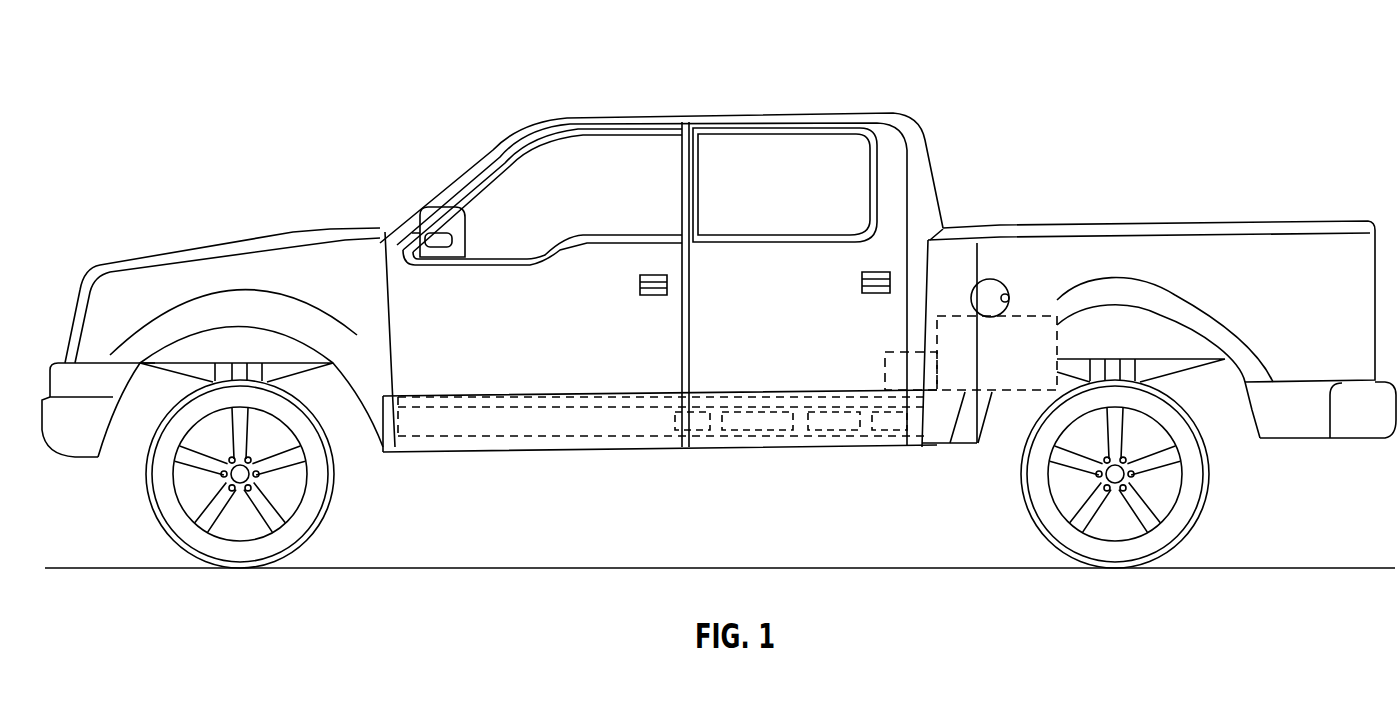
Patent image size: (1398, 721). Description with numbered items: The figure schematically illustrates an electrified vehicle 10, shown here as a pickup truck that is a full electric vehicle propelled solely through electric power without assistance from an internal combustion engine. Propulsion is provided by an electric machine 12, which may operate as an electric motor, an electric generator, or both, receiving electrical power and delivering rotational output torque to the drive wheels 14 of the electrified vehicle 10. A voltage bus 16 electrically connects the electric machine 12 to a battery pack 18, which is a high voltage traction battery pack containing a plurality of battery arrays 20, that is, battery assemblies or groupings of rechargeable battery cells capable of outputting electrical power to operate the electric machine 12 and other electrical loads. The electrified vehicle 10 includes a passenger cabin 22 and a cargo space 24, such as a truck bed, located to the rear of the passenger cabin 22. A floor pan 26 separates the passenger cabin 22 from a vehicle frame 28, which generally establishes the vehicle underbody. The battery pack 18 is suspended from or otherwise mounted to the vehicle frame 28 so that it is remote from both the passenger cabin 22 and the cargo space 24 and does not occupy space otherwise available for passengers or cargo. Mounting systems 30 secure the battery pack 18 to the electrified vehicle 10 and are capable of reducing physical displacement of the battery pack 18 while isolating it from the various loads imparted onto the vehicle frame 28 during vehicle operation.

The electrified vehicle 10 is at (719, 327).
The electric machine 12 is at (1018, 316).
The drive wheels 14 is at (235, 560).
The voltage bus 16 is at (885, 372).
The battery pack 18 is at (664, 412).
The battery arrays 20 is at (785, 430).
The passenger cabin 22 is at (608, 165).
The cargo space 24 is at (1152, 222).
The floor pan 26 is at (534, 398).
The vehicle frame 28 is at (483, 419).
The mounting systems 30 is at (682, 438).